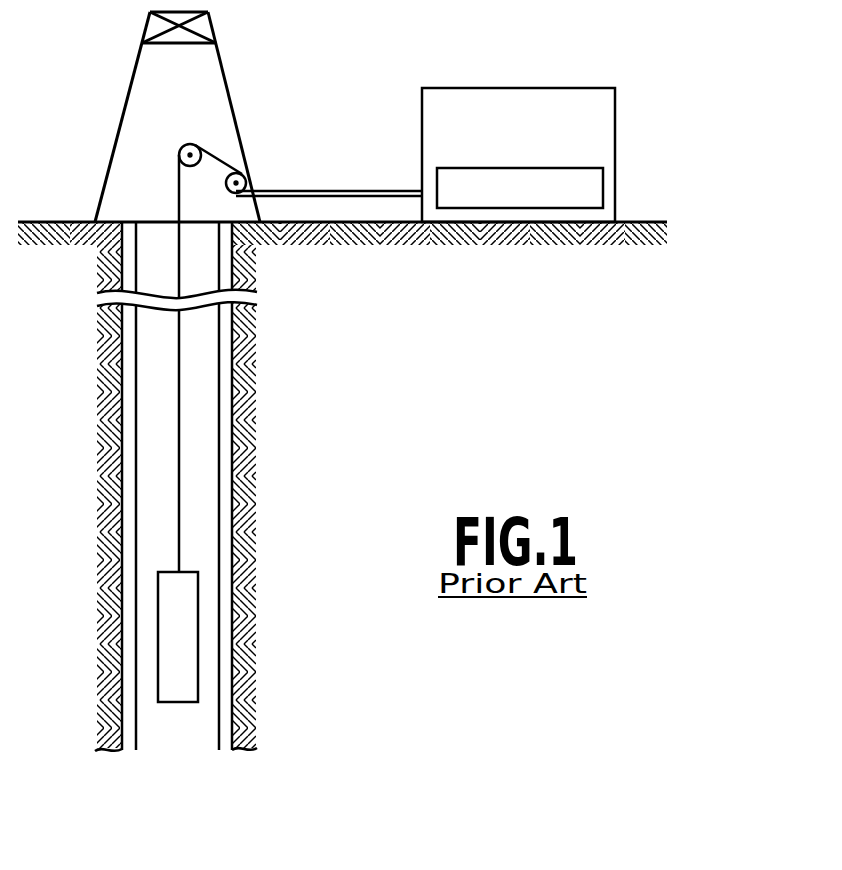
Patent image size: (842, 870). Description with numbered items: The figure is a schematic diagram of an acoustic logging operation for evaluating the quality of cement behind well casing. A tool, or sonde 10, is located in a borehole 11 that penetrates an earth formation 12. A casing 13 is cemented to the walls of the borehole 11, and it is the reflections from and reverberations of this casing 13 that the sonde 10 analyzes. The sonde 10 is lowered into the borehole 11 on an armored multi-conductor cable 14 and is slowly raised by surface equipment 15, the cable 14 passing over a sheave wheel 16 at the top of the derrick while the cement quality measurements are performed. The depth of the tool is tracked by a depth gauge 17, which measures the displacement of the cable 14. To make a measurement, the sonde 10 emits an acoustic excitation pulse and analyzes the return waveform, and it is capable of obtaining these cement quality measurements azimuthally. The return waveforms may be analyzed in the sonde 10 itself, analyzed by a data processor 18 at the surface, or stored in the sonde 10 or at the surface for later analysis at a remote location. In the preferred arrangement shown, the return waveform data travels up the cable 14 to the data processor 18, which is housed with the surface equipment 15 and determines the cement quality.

The sonde 10 is at (176, 690).
The borehole 11 is at (198, 358).
The earth formation 12 is at (248, 418).
The casing 13 is at (227, 518).
The armored multi-conductor cable 14 is at (178, 210).
The surface equipment 15 is at (582, 97).
The sheave wheel 16 is at (182, 145).
The depth gauge 17 is at (244, 175).
The data processor 18 is at (606, 189).